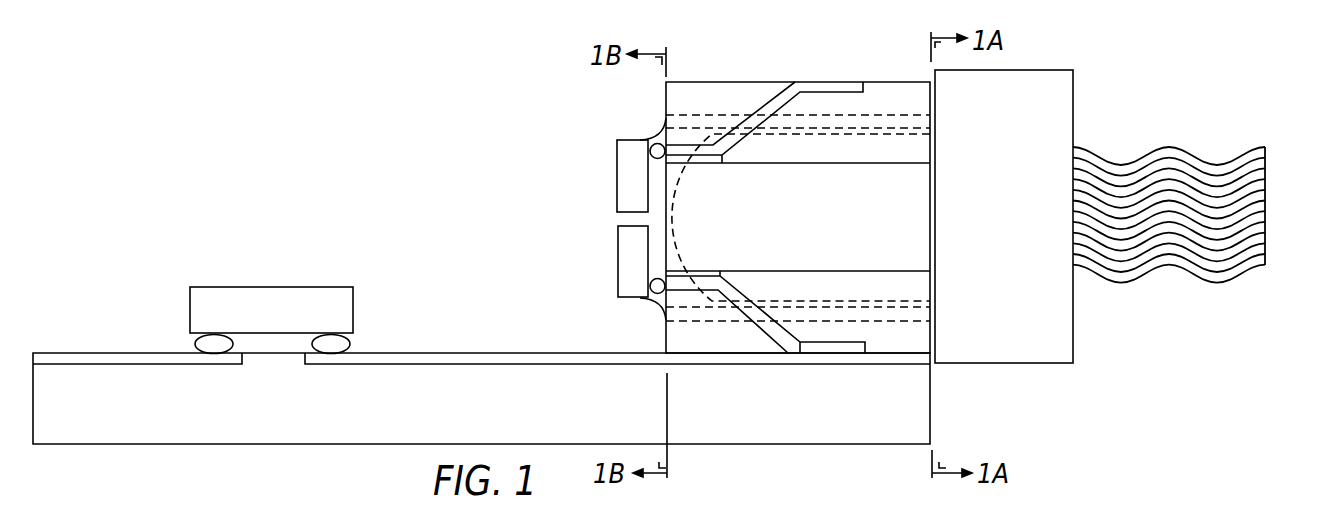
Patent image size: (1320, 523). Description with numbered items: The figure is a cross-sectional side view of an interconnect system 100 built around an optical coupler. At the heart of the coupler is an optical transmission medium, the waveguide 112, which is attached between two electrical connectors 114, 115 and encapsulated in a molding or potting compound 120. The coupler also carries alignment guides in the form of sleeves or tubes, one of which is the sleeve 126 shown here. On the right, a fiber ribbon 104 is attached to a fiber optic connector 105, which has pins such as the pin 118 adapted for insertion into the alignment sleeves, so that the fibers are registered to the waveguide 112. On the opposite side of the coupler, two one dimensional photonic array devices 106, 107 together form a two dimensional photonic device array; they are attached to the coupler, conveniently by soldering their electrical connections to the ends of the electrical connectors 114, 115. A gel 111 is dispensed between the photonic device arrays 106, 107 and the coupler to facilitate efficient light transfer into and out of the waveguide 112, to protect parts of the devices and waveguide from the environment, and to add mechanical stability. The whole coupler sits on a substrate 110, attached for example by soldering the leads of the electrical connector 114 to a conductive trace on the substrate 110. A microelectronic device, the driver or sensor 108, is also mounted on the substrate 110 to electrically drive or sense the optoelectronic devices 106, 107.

The interconnect system 100 is at (554, 84).
The fiber ribbon 104 is at (1170, 147).
The fiber optic connector 105 is at (1045, 70).
The photonic array device 106 is at (617, 262).
The photonic array device 107 is at (617, 175).
The driver (or sensor) 108 is at (272, 286).
The substrate 110 is at (132, 446).
The gel 111 is at (662, 302).
The waveguide 112 is at (845, 235).
The electrical connector 114 is at (773, 344).
The electrical connector 115 is at (768, 90).
The pin 118 is at (680, 212).
The molding or potting compound 120 is at (883, 82).
The sleeve or tube 126 is at (906, 320).